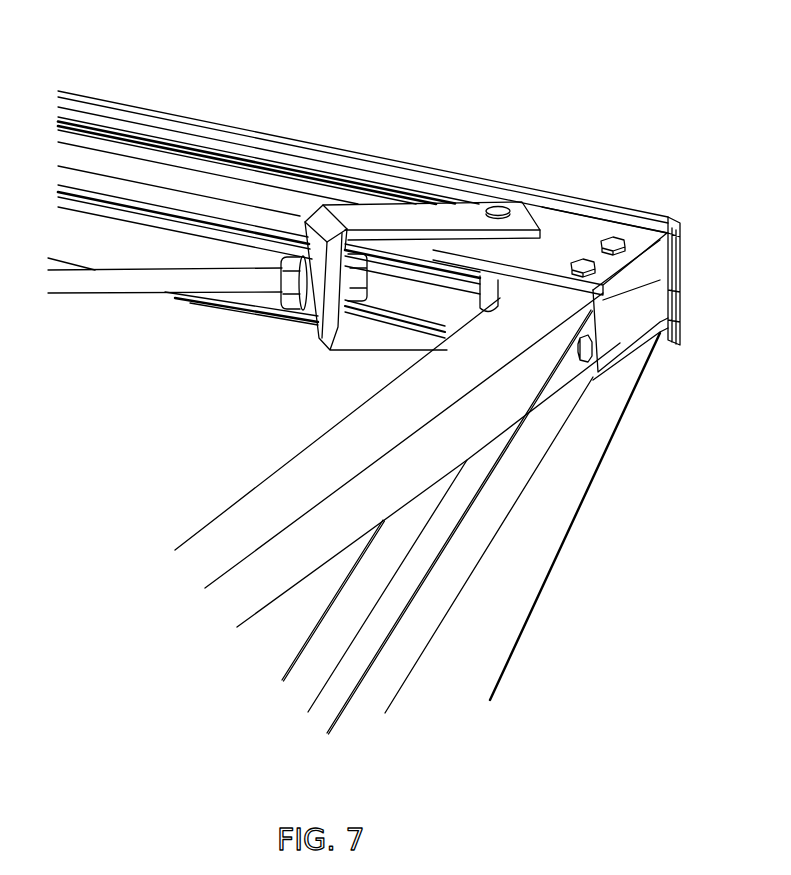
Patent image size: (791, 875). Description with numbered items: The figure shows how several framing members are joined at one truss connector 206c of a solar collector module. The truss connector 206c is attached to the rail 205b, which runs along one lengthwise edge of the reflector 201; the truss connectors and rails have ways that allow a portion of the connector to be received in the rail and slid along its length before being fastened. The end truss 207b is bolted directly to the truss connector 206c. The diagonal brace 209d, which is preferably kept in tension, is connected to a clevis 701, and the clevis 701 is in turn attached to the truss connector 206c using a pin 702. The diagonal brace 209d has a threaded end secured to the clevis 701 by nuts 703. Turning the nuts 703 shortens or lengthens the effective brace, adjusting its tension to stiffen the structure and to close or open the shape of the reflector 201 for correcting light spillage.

The rail 205b is at (227, 137).
The clevis 701 is at (447, 215).
The pin 702 is at (498, 205).
The truss connector 206c is at (558, 232).
The diagonal brace 209d is at (143, 283).
The nuts 703 is at (318, 328).
The end truss 207b is at (480, 403).
The reflector 201 is at (490, 663).